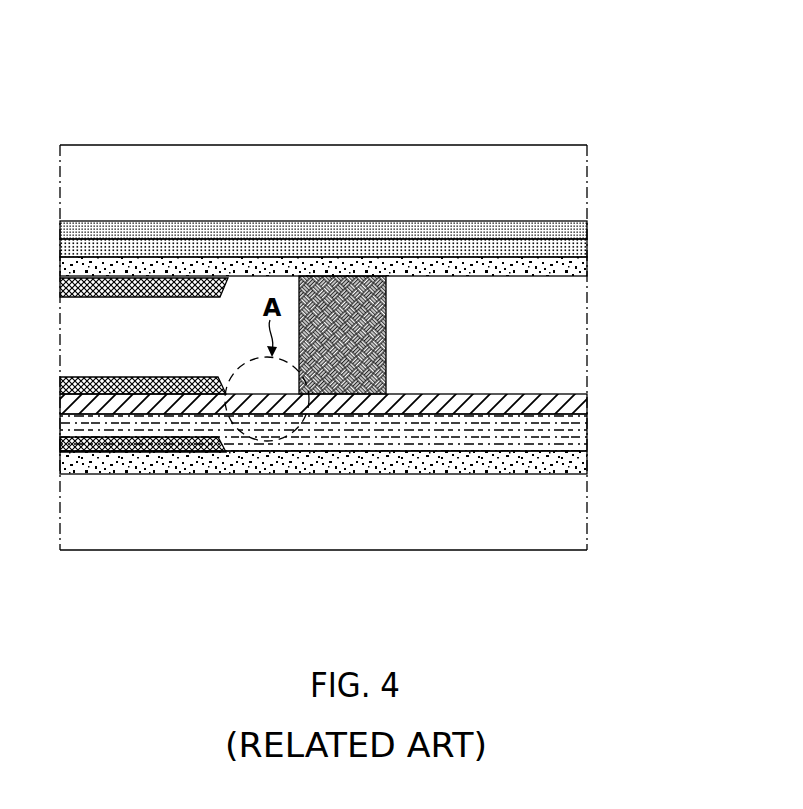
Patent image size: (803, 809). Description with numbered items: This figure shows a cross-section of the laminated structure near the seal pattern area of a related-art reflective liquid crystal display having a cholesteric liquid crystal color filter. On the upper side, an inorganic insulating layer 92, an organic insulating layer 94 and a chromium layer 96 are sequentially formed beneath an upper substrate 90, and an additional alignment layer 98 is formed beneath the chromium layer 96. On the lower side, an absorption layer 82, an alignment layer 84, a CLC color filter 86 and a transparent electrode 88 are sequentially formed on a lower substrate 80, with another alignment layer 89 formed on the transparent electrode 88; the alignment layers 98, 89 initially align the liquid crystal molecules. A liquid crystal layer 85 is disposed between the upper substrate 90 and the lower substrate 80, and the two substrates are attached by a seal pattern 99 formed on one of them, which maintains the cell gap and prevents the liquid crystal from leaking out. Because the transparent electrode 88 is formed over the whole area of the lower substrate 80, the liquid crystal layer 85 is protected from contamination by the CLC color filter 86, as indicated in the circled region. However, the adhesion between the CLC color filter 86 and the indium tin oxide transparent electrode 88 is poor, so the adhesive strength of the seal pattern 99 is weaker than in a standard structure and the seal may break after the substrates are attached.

The lower substrate 80 is at (580, 514).
The absorption layer 82 is at (587, 465).
The alignment layer 84 is at (130, 453).
The liquid crystal layer 85 is at (574, 334).
The CLC color filter 86 is at (587, 437).
The transparent electrode 88 is at (587, 404).
The alignment layer 89 is at (175, 377).
The upper substrate 90 is at (574, 182).
The inorganic insulating layer 92 is at (587, 232).
The organic insulating layer 94 is at (587, 251).
The chromium layer 96 is at (587, 270).
The alignment layer 98 is at (110, 297).
The seal pattern 99 is at (386, 330).